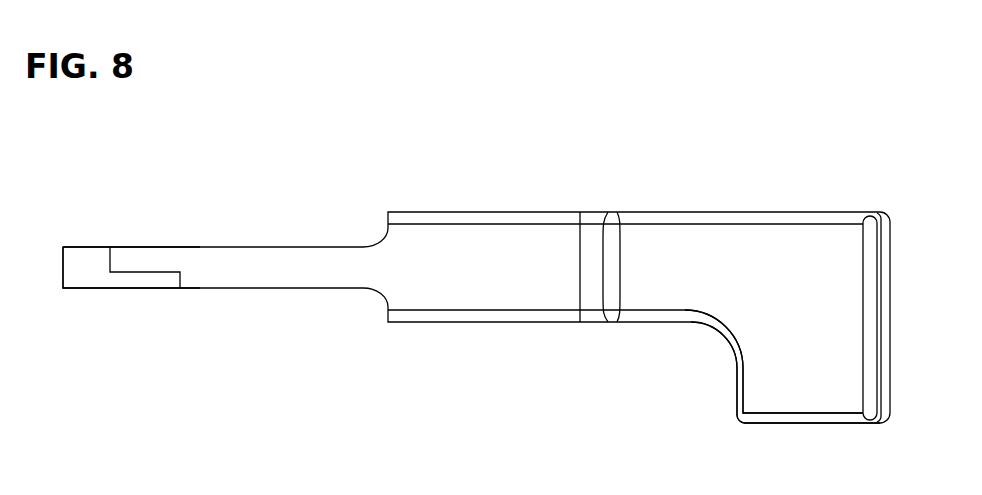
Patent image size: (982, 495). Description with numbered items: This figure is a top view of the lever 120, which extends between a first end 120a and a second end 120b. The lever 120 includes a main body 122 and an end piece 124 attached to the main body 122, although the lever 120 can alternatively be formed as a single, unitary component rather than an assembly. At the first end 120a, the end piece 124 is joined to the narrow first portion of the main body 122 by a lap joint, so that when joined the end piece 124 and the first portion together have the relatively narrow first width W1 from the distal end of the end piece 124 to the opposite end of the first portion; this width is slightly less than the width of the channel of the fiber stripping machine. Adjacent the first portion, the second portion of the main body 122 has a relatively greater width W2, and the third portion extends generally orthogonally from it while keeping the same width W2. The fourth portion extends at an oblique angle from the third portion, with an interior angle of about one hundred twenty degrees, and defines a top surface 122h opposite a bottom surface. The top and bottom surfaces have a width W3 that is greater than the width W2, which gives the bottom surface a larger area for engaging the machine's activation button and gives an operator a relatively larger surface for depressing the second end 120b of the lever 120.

The lever 120 is at (222, 157).
The first end 120a is at (62, 277).
The second end 120b is at (890, 258).
The main body 122 is at (458, 314).
The top surface 122h is at (773, 380).
The end piece 124 is at (115, 277).
The first width W1 is at (273, 226).
The second width W2 is at (503, 192).
The third width W3 is at (792, 192).